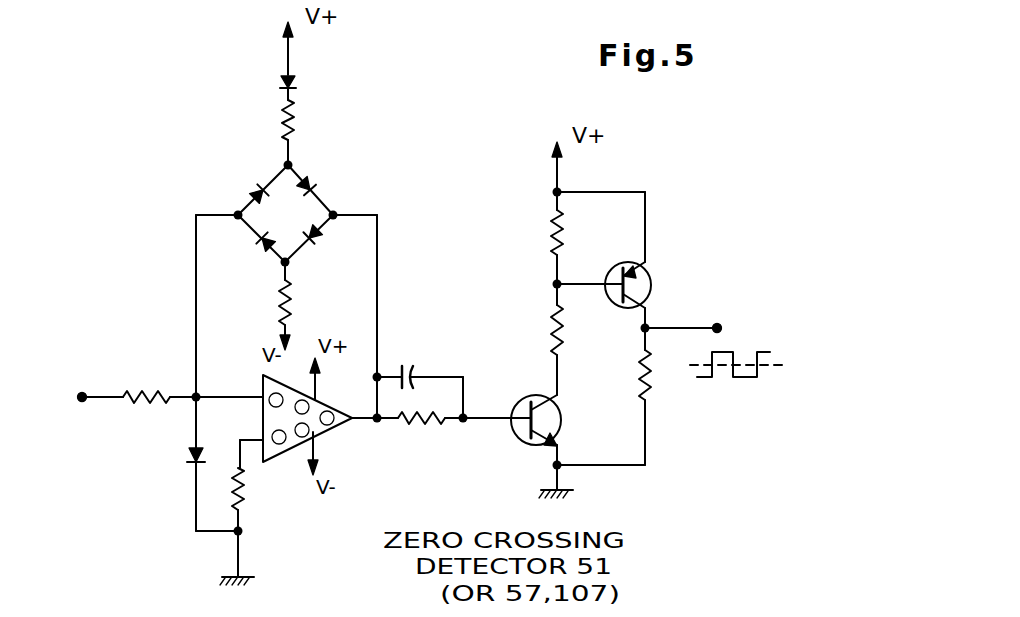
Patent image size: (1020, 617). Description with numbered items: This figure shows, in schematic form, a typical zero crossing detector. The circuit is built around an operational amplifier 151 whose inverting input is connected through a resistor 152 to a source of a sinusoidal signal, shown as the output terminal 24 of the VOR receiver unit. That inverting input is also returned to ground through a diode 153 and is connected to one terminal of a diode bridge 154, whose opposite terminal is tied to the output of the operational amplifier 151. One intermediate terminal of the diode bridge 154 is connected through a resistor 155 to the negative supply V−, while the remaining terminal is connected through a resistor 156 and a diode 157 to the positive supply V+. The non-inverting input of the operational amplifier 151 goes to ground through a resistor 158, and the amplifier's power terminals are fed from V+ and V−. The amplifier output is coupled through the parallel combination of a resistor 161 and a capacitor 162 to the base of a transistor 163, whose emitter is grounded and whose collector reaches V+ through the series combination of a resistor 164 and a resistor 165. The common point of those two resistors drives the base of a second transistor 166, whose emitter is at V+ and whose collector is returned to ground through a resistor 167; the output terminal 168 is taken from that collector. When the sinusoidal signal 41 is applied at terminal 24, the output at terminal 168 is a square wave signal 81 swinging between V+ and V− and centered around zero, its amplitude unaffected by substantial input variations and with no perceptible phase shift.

The output terminal of the VOR receiver unit 24 is at (80, 402).
The sinusoidal signal 41 is at (88, 360).
The square wave signal 81 is at (756, 378).
The operational amplifier 151 is at (290, 462).
The resistor 152 is at (148, 393).
The diode 153 is at (186, 455).
The diode bridge 154 is at (285, 213).
The resistor 155 is at (292, 296).
The resistor 156 is at (294, 125).
The diode 157 is at (296, 82).
The resistor 158 is at (245, 505).
The resistor 161 is at (412, 424).
The capacitor 162 is at (410, 368).
The transistor 163 is at (527, 446).
The resistor 164 is at (562, 340).
The resistor 165 is at (552, 232).
The second transistor 166 is at (628, 262).
The resistor 167 is at (652, 380).
The output terminal 168 is at (718, 326).